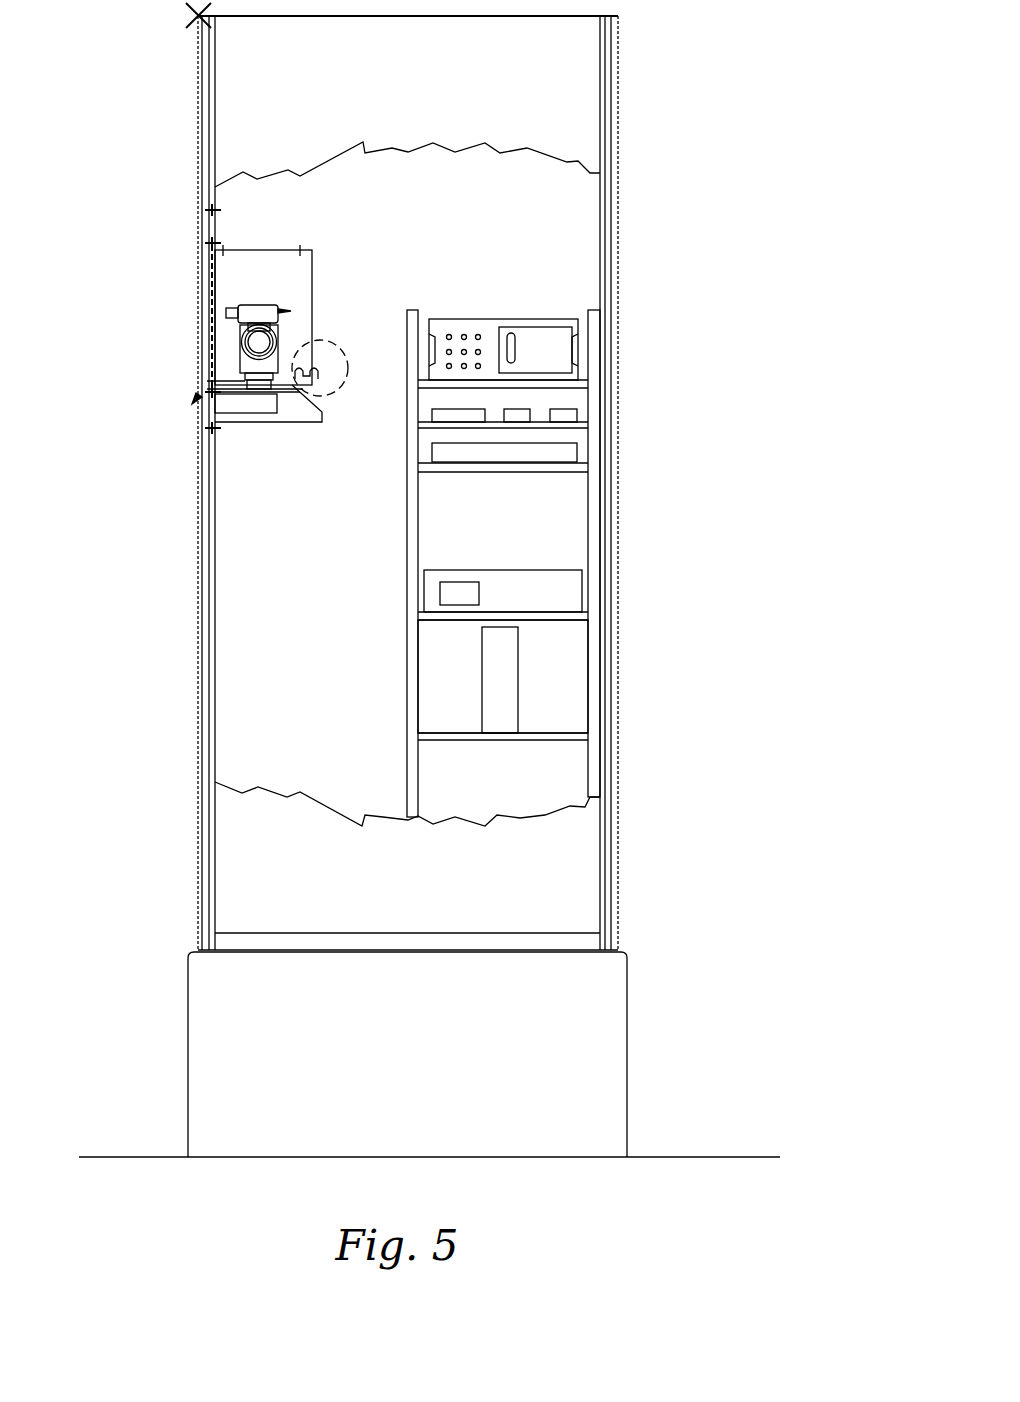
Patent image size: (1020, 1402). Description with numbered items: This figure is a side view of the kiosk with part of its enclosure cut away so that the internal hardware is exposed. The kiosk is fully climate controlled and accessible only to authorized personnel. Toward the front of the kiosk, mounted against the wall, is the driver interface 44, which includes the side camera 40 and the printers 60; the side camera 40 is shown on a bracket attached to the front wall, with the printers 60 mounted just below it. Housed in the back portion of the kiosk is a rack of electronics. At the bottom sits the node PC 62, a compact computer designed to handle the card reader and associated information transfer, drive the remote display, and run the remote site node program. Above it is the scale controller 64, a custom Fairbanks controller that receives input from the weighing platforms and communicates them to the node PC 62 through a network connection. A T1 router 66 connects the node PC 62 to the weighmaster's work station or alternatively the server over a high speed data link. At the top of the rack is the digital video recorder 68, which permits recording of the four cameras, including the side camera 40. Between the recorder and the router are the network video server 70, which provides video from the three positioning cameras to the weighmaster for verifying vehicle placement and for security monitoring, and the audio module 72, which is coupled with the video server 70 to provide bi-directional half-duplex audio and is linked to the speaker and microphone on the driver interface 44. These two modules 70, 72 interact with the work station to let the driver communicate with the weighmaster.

The side camera 40 is at (272, 305).
The driver interface 44 is at (190, 266).
The printers 60 is at (248, 408).
The node PC 62 is at (432, 673).
The scale controller 64 is at (432, 583).
The T1 router 66 is at (437, 453).
The digital video recorder 68 is at (467, 325).
The network video server 70 is at (437, 411).
The audio module 72 is at (525, 412).